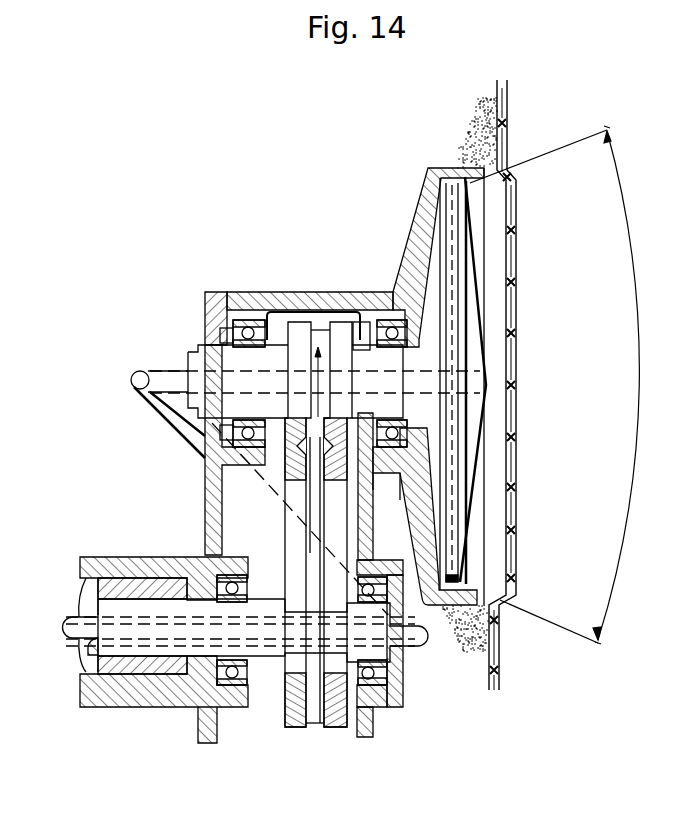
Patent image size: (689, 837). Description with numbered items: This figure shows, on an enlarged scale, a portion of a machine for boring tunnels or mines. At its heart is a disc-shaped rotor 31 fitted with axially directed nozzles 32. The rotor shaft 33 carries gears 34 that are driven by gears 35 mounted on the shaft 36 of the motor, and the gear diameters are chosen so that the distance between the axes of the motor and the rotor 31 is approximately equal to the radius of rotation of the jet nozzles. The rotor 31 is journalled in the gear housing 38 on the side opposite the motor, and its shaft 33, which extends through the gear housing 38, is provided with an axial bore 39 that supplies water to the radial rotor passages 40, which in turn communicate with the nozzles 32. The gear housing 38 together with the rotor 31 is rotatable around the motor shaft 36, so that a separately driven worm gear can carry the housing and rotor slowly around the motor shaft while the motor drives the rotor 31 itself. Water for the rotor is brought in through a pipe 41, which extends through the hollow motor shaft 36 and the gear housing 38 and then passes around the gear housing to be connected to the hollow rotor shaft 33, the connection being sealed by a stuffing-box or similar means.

The disc-shaped rotor 31 is at (470, 430).
The axially directed nozzles 32 is at (449, 581).
The rotor shaft 33 is at (273, 357).
The gears 34 is at (296, 403).
The gears 35 is at (302, 703).
The motor shaft 36 is at (200, 625).
The gear housing 38 is at (212, 490).
The axial bore 39 is at (227, 378).
The radial rotor passages 40 is at (460, 410).
The pipe 41 is at (73, 643).